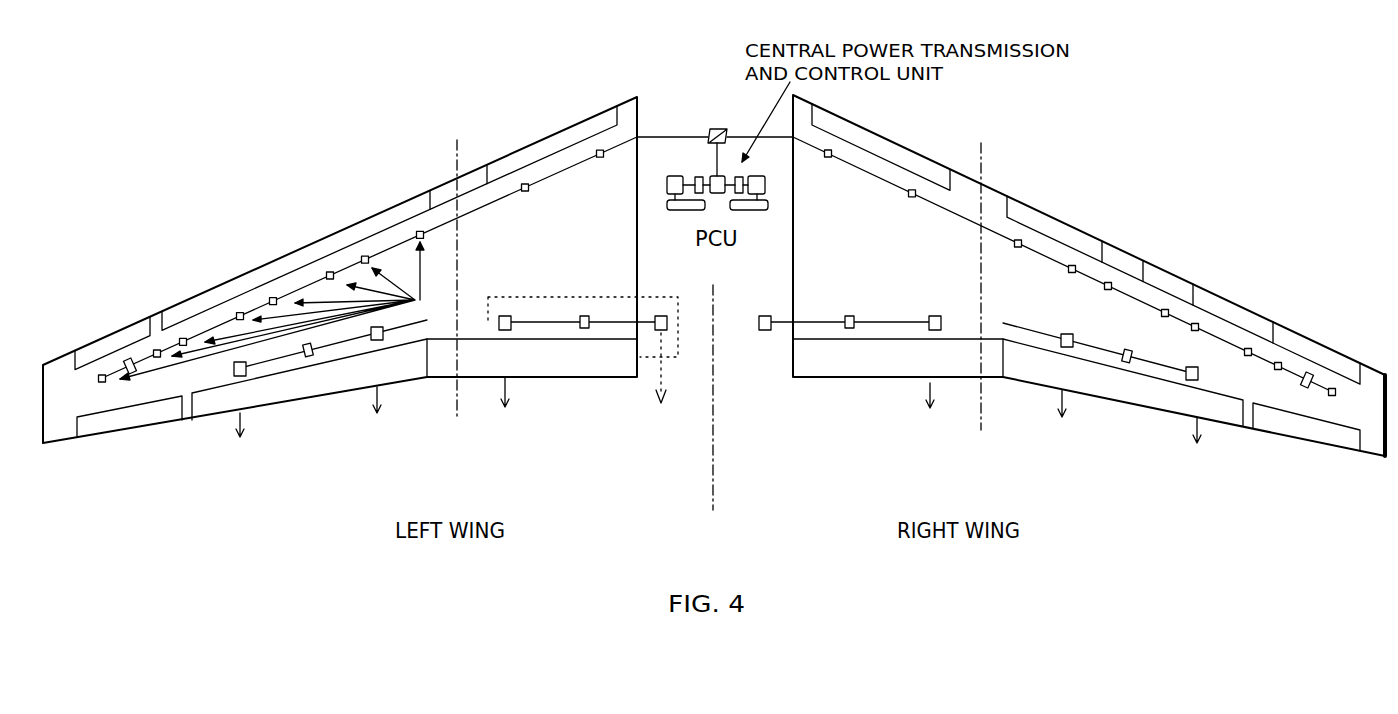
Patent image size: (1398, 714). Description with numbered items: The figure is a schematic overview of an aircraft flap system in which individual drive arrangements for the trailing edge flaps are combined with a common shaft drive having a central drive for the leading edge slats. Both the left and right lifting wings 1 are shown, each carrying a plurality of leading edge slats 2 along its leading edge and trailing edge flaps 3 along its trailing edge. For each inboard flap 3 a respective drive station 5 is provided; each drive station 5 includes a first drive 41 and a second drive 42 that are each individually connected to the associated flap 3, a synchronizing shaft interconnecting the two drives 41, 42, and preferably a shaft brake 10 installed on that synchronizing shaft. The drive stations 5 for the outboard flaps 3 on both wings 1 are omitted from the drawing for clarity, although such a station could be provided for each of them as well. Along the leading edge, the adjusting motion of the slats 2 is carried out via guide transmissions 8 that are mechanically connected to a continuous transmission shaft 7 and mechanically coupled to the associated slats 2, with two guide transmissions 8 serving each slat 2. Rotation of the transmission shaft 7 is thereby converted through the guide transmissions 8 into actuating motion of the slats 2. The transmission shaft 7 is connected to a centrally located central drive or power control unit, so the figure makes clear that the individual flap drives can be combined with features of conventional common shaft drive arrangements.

The lifting wing 1 is at (143, 257).
The leading edge slat 2 is at (338, 232).
The trailing edge flap 3 is at (105, 425).
The drive station 5 is at (530, 293).
The transmission shaft 7 is at (1140, 298).
The guide transmission 8 is at (282, 311).
The shaft brake 10 is at (305, 358).
The first drive 41 is at (634, 293).
The second drive 42 is at (510, 320).